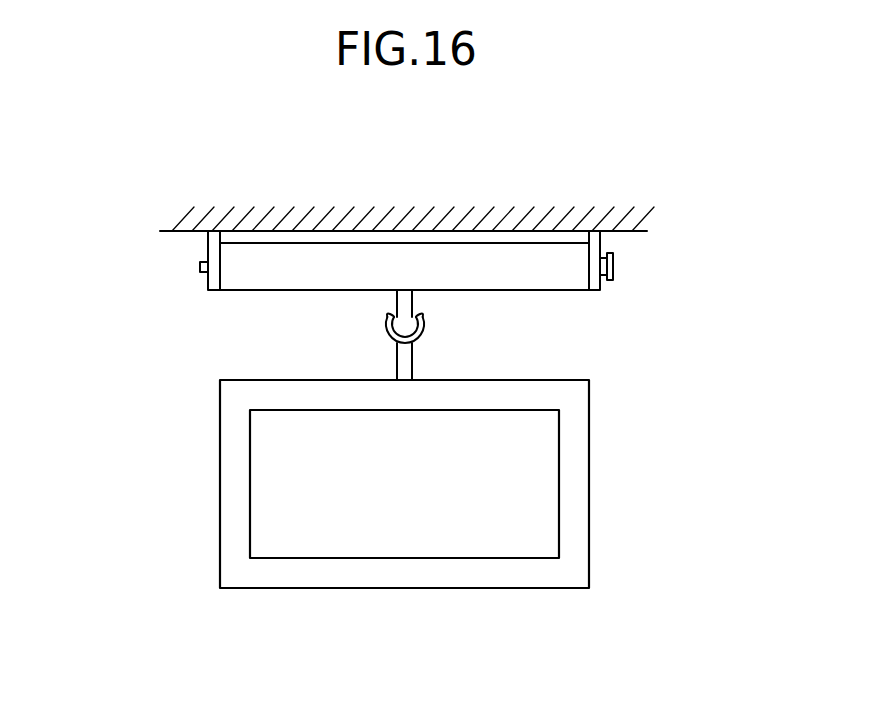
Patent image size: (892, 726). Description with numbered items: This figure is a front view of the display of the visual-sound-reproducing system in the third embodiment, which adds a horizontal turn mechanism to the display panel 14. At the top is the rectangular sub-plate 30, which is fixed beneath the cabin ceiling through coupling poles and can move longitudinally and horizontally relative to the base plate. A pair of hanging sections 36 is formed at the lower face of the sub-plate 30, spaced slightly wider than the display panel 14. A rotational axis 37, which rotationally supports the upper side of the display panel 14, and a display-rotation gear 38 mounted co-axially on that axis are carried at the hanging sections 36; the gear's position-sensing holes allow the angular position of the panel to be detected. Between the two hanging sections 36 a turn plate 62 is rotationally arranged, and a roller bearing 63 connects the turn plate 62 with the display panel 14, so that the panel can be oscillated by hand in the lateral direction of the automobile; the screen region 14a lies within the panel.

The sub-plate 30 is at (425, 213).
The hanging section 36 is at (214, 243).
The rotational axis 37 is at (200, 267).
The display-rotation gear 38 is at (615, 258).
The turn plate 62 is at (537, 282).
The roller bearing 63 is at (388, 323).
The display panel 14 is at (227, 487).
The display screen 14a is at (383, 545).